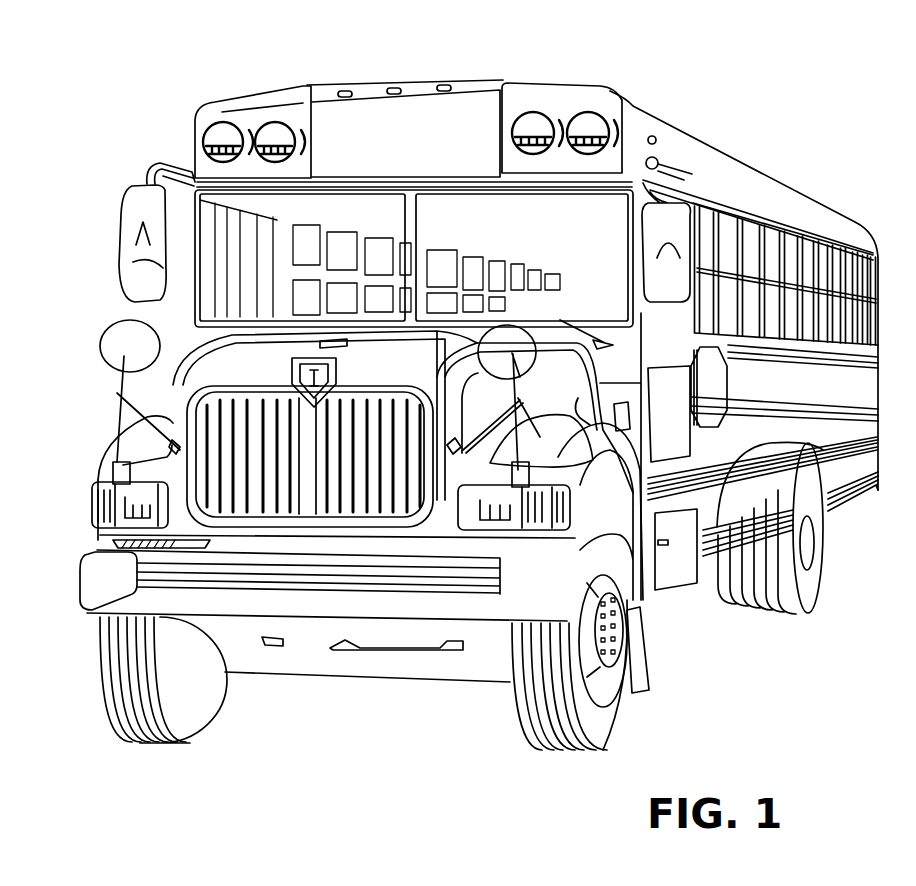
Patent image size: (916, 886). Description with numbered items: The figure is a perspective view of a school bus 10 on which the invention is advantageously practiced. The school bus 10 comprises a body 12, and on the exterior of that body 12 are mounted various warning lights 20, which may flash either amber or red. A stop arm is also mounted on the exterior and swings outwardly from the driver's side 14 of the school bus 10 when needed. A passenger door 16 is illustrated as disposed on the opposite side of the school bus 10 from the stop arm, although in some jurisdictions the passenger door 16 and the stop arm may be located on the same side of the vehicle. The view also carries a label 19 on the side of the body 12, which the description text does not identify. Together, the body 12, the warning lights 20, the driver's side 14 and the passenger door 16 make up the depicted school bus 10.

The school bus 10 is at (798, 178).
The body 12 is at (875, 475).
The driver's side 14 is at (717, 587).
The passenger door 16 is at (235, 243).
The side body panel 19 is at (745, 380).
The warning lights 20 is at (550, 107).